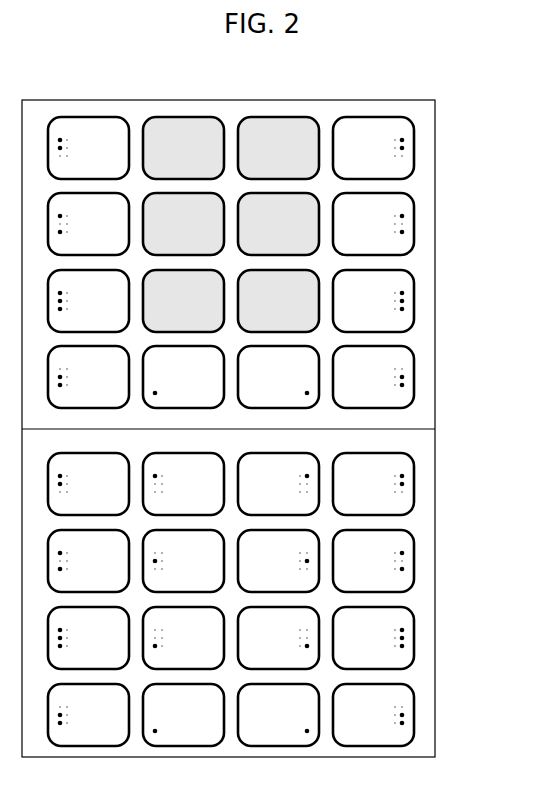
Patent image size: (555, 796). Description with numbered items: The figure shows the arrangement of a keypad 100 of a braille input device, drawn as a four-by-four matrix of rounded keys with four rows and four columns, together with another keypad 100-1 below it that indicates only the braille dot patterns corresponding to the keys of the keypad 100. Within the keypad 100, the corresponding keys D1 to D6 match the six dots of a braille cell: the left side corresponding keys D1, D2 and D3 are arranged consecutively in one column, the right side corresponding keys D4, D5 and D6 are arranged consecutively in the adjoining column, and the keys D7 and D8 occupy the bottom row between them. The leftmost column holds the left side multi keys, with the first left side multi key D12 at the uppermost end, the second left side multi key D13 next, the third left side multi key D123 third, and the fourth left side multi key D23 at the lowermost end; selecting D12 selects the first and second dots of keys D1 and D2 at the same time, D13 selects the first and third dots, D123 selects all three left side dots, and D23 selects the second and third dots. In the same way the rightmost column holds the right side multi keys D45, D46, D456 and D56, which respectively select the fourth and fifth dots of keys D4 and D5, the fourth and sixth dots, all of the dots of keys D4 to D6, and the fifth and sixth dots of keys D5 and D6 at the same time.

The keypad 100 is at (428, 196).
The another keypad 100-1 is at (428, 526).
The first left side corresponding key D1 is at (183, 148).
The second left side corresponding key D2 is at (183, 224).
The third left side corresponding key D3 is at (183, 301).
The first right side corresponding key D4 is at (278, 148).
The second right side corresponding key D5 is at (278, 224).
The third right side corresponding key D6 is at (278, 301).
The key D7 is at (183, 377).
The key D8 is at (278, 377).
The first left side multi key D12 is at (88, 148).
The second left side multi key D13 is at (88, 224).
The third left side multi key D123 is at (88, 301).
The fourth left side multi key D23 is at (88, 377).
The first right side multi key D45 is at (373, 148).
The second right side multi key D46 is at (373, 224).
The third right side multi key D456 is at (373, 301).
The fourth right side multi key D56 is at (373, 377).